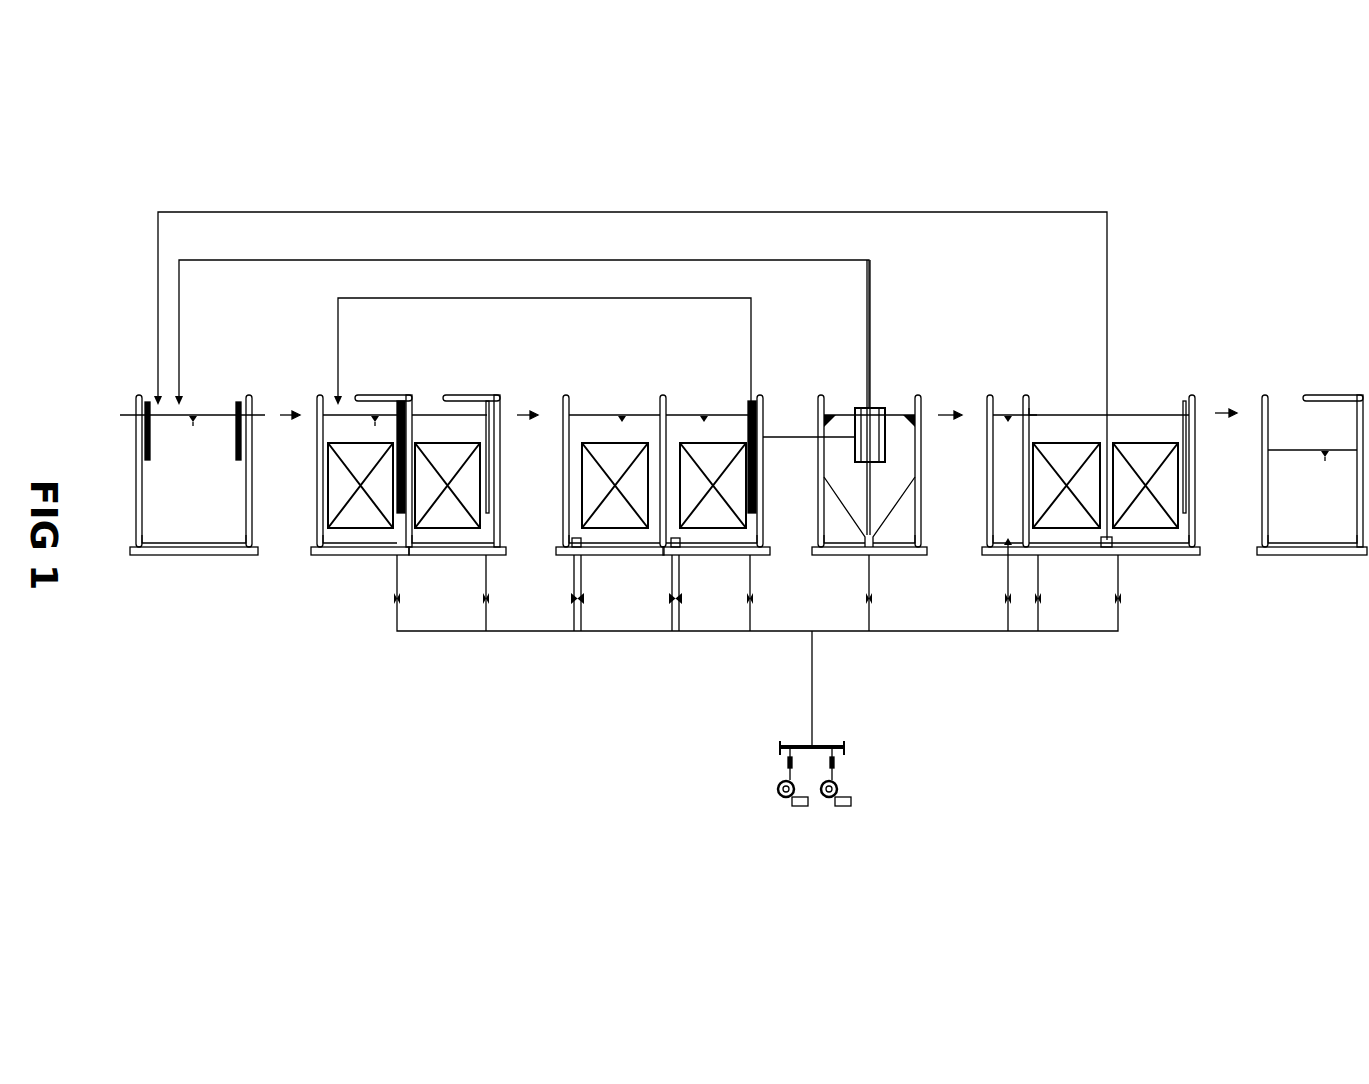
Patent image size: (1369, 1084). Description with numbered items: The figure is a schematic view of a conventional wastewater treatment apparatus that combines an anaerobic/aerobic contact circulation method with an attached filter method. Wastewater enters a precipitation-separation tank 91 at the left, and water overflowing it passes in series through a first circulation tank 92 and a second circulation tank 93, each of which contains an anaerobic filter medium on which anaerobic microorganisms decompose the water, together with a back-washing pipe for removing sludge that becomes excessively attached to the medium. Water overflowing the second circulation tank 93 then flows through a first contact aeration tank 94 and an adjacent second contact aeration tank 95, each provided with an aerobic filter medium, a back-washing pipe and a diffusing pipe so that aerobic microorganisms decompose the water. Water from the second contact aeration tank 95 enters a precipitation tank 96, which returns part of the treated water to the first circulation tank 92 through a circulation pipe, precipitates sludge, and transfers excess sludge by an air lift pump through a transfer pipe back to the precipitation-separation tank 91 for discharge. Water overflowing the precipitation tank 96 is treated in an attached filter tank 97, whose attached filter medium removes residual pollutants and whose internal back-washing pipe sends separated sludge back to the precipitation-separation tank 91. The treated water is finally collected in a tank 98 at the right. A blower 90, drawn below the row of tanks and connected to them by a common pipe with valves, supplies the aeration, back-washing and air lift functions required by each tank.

The blower 90 is at (766, 792).
The precipitation-separation tank 91 is at (165, 570).
The first circulation tank 92 is at (355, 566).
The second circulation tank 93 is at (452, 565).
The first contact aeration tank 94 is at (620, 565).
The second contact aeration tank 95 is at (718, 565).
The precipitation tank 96 is at (904, 565).
The attached filter tank 97 is at (1130, 388).
The treated water tank 98 is at (1311, 565).